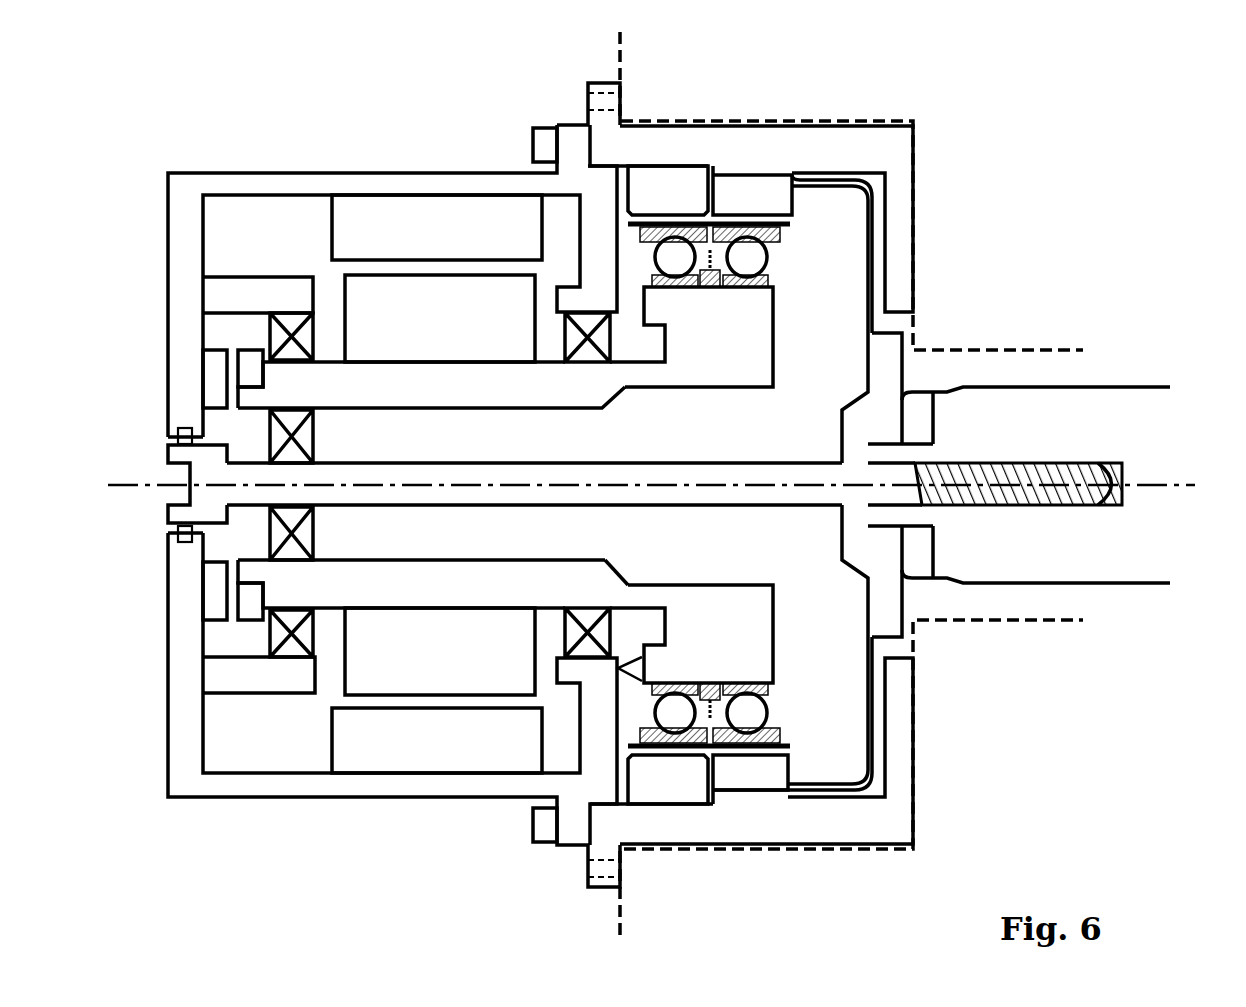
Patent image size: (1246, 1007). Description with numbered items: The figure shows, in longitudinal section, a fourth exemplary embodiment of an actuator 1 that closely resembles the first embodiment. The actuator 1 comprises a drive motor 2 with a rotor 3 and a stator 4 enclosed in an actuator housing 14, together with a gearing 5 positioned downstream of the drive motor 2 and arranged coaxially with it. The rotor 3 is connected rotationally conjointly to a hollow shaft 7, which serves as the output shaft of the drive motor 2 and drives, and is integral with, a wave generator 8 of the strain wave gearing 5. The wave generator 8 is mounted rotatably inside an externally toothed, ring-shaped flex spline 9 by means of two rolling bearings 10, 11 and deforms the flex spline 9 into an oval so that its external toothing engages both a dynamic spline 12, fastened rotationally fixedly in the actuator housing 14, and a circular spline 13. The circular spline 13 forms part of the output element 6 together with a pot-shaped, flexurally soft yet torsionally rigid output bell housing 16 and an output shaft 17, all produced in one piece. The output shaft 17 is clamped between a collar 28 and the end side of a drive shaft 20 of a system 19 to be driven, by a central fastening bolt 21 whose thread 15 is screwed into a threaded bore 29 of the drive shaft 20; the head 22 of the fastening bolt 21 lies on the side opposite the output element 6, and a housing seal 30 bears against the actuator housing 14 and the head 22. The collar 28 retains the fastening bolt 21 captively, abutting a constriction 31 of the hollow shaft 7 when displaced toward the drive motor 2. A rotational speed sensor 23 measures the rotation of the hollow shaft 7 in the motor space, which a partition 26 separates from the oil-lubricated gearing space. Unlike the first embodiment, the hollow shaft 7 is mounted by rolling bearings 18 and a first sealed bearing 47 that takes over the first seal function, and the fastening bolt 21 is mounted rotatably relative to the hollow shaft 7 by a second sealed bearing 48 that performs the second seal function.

The actuator 1 is at (202, 142).
The drive motor 2 is at (435, 786).
The rotor 3 is at (440, 485).
The stator 4 is at (437, 484).
The gearing 5 is at (712, 809).
The output element 6 is at (834, 706).
The hollow shaft 7 is at (484, 400).
The wave generator 8 is at (691, 485).
The flex spline 9 is at (760, 224).
The rolling bearing 10 is at (772, 264).
The rolling bearing 11 is at (683, 292).
The dynamic spline 12 is at (668, 485).
The circular spline 13 is at (752, 485).
The actuator housing 14 is at (335, 177).
The thread 15 is at (1005, 493).
The output bell housing 16 is at (872, 232).
The output shaft 17 is at (895, 398).
The rolling bearing 18 is at (290, 356).
The system to be driven 19 is at (1110, 103).
The drive shaft 20 is at (1112, 388).
The fastening bolt 21 is at (490, 498).
The head 22 is at (148, 512).
The rotational speed sensor 23 is at (230, 330).
The partition 26 is at (594, 268).
The collar 28 is at (847, 437).
The threaded bore 29 is at (1115, 463).
The housing seal 30 is at (182, 442).
The constriction 31 is at (624, 565).
The first sealed bearing 47 is at (584, 356).
The second sealed bearing 48 is at (312, 436).